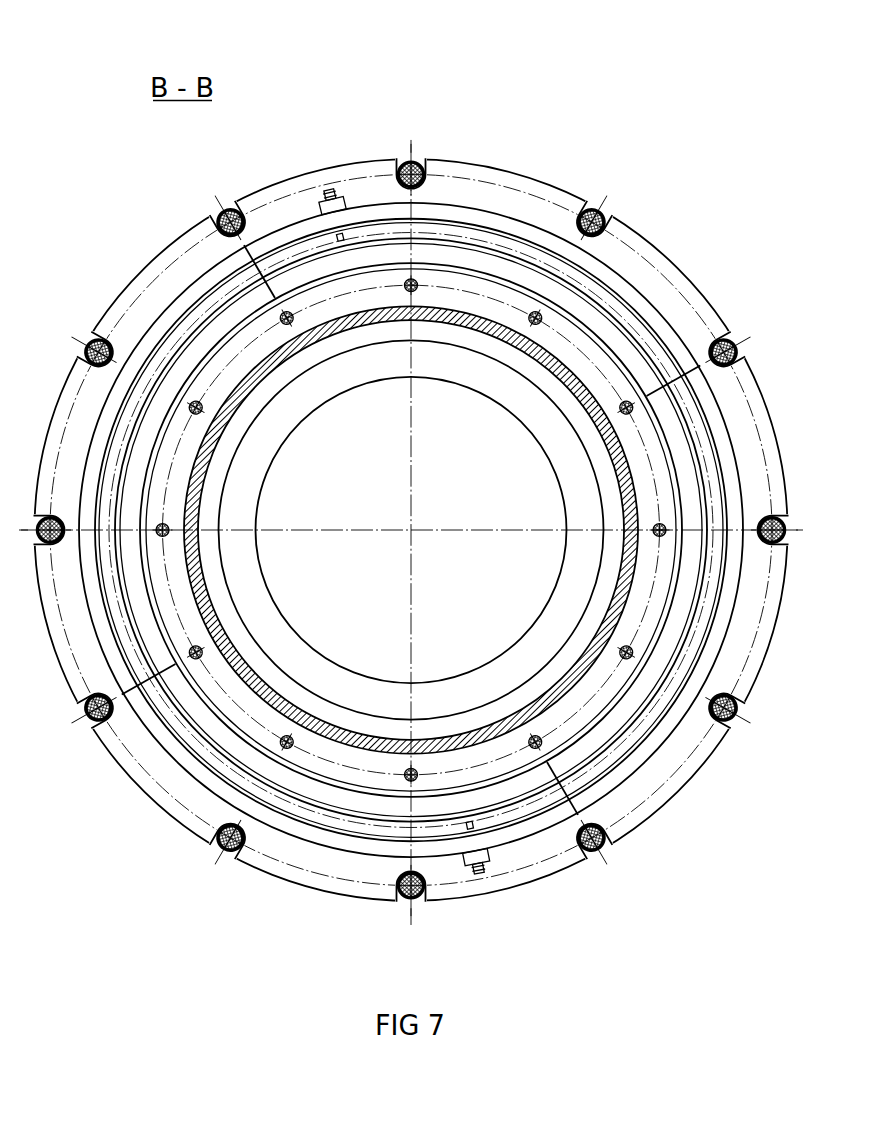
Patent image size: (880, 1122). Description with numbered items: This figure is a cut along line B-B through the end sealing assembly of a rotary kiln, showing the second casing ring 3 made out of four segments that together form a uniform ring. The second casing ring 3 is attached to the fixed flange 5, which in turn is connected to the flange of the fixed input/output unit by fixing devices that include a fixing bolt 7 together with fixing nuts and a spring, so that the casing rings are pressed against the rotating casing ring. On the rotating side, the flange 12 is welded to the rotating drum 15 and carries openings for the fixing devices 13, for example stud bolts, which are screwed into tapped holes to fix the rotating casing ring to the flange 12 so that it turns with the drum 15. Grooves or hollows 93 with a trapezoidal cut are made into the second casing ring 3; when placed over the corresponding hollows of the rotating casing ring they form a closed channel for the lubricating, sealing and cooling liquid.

The second casing ring 3 is at (493, 259).
The fixed flange 5 is at (190, 263).
The fixing bolt 7 is at (219, 215).
The flange 12 is at (587, 683).
The fixing devices 13 is at (633, 654).
The rotating drum 15 is at (600, 673).
The grooves or hollows 93 is at (610, 295).